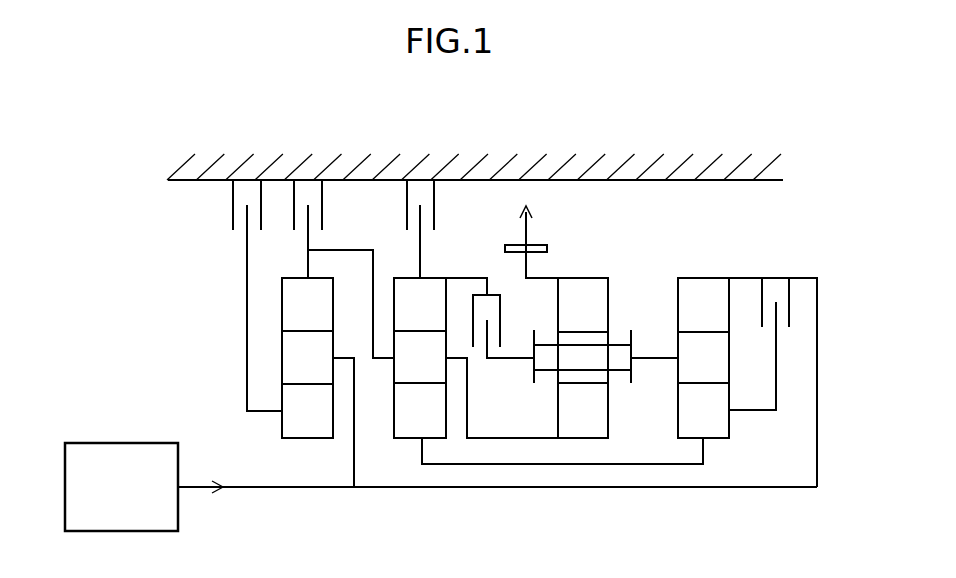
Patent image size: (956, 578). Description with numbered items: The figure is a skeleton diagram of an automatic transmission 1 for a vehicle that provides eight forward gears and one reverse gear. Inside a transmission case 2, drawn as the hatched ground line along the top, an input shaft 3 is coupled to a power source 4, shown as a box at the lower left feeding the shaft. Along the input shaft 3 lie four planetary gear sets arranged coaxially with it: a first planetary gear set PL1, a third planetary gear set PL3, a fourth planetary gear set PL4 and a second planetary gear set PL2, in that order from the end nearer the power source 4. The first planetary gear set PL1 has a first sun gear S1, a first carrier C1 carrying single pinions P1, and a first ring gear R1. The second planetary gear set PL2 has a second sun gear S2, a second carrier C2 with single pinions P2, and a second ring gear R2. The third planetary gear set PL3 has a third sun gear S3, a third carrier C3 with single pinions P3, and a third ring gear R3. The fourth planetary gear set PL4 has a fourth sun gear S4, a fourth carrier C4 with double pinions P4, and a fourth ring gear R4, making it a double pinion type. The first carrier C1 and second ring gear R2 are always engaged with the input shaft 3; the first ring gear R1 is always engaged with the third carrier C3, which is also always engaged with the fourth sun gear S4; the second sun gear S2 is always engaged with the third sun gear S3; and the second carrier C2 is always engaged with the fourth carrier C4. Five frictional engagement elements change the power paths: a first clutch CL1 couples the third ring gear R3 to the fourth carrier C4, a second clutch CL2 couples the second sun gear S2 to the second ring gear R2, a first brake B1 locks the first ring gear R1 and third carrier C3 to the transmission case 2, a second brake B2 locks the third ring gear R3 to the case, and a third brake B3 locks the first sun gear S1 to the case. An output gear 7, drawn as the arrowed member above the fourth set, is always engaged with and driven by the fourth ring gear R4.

The automatic transmission 1 is at (386, 142).
The transmission case 2 is at (675, 157).
The input shaft 3 is at (497, 489).
The power source 4 is at (113, 442).
The output gear 7 is at (544, 245).
The first brake B1 is at (322, 197).
The second brake B2 is at (434, 202).
The third brake B3 is at (233, 198).
The first clutch CL1 is at (517, 303).
The second clutch CL2 is at (789, 293).
The first planetary gear set PL1 is at (270, 430).
The second planetary gear set PL2 is at (709, 260).
The third planetary gear set PL3 is at (437, 258).
The fourth planetary gear set PL4 is at (588, 258).
The first ring gear R1 is at (282, 303).
The single pinions P1 is at (282, 358).
The first sun gear S1 is at (308, 438).
The first carrier C1 is at (345, 356).
The second ring gear R2 is at (678, 297).
The single pinions P2 is at (729, 353).
The second sun gear S2 is at (729, 428).
The second carrier C2 is at (650, 360).
The third ring gear R3 is at (394, 293).
The single pinions P3 is at (394, 368).
The third sun gear S3 is at (407, 438).
The third carrier C3 is at (453, 356).
The fourth ring gear R4 is at (608, 300).
The double pinions P4 is at (556, 345).
The fourth sun gear S4 is at (608, 420).
The fourth carrier C4 is at (633, 352).